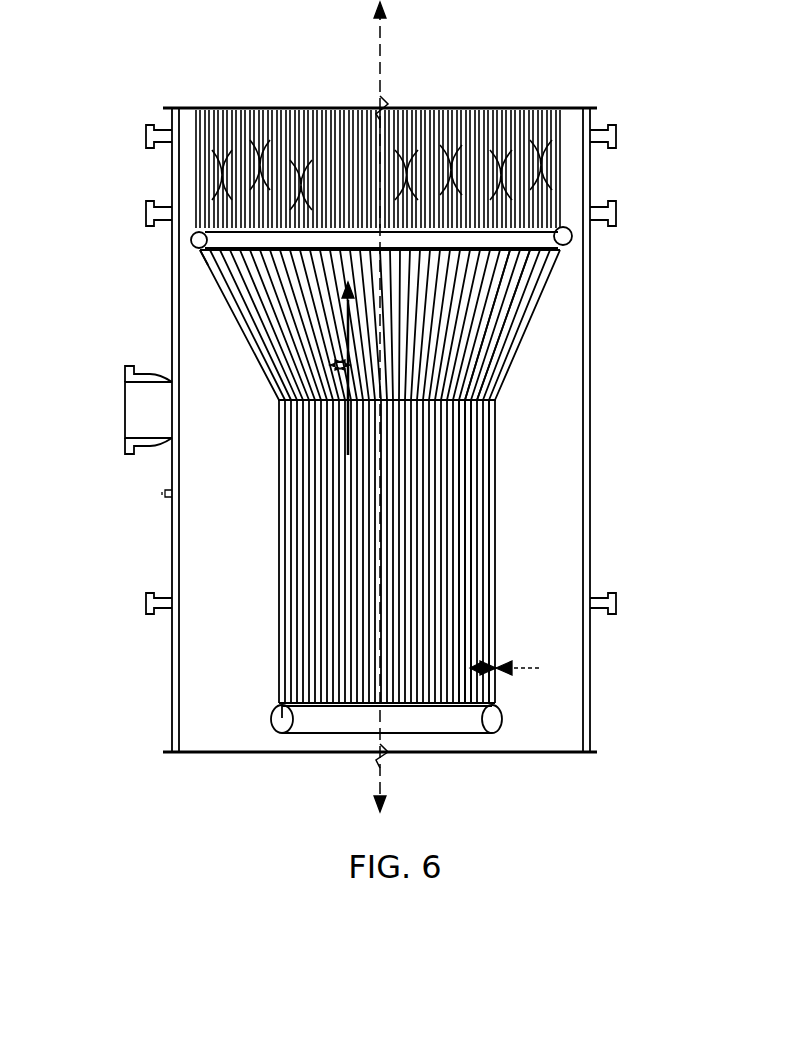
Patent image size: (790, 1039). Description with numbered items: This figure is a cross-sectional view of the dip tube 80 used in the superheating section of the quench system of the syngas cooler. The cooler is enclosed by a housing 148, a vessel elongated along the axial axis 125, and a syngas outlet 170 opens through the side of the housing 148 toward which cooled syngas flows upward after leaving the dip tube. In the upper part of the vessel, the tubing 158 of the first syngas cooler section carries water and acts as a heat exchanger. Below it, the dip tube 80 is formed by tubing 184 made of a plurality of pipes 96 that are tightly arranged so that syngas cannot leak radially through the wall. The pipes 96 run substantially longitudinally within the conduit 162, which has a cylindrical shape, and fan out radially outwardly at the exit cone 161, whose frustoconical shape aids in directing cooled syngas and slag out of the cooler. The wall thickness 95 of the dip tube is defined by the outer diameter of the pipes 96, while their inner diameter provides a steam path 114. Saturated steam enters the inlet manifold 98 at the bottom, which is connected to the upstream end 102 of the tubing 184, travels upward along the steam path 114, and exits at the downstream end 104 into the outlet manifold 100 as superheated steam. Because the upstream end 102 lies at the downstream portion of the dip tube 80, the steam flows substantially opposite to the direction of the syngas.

The housing 148 is at (592, 690).
The syngas outlet 170 is at (128, 418).
The tubing 158 is at (242, 108).
The axial axis 125 is at (386, 58).
The outlet manifold 100 is at (190, 240).
The downstream end 104 is at (205, 256).
The exit cone 161 is at (252, 350).
The steam path 114 is at (278, 396).
The tubing 184 is at (325, 460).
The conduit 162 is at (280, 576).
The dip tube 80 is at (290, 607).
The pipes 96 is at (496, 372).
The upstream end 102 is at (279, 702).
The inlet manifold 98 is at (284, 735).
The wall thickness 95 is at (515, 668).